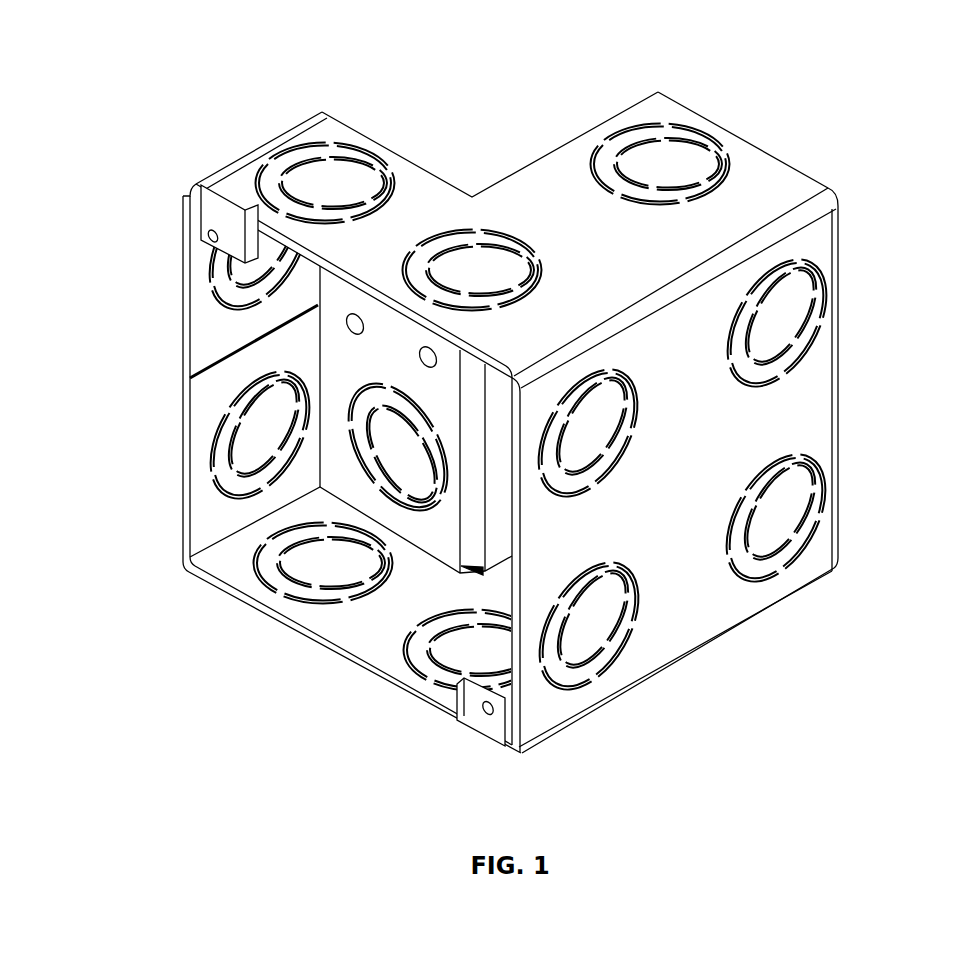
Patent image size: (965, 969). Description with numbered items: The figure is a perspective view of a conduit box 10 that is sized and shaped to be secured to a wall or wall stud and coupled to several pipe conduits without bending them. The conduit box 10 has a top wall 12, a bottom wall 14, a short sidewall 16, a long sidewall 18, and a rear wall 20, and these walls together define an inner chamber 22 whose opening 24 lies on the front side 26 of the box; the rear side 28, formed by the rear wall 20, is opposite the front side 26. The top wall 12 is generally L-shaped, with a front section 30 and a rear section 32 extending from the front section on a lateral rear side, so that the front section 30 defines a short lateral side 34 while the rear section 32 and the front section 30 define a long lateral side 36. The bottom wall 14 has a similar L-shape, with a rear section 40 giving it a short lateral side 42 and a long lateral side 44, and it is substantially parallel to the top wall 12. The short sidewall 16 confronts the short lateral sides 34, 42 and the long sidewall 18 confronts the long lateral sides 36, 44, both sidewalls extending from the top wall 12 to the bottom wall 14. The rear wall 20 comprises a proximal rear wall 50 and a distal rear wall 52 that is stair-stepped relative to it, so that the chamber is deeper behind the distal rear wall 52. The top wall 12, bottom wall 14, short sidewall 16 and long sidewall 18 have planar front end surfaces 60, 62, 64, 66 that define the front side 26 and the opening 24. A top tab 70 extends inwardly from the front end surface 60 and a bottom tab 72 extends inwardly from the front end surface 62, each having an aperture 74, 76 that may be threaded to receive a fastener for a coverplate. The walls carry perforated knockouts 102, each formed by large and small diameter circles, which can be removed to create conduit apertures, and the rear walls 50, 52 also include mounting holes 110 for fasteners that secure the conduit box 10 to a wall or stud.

The conduit box 10 is at (835, 123).
The top wall 12 is at (557, 193).
The bottom wall 14 is at (422, 712).
The short sidewall 16 is at (185, 353).
The long sidewall 18 is at (800, 432).
The rear wall 20 is at (783, 88).
The inner chamber 22 is at (382, 640).
The opening 24 is at (228, 592).
The front side 26 is at (200, 706).
The rear side 28 is at (912, 311).
The front section 30 is at (413, 193).
The rear section 32 is at (780, 188).
The short lateral side 34 is at (255, 146).
The long lateral side 36 is at (648, 292).
The rear section 40 is at (680, 655).
The short lateral side 42 is at (183, 560).
The long lateral side 44 is at (800, 686).
The proximal rear wall 50 is at (345, 482).
The distal rear wall 52 is at (842, 397).
The front end surface 60 is at (332, 293).
The front end surface 62 is at (292, 630).
The front end surface 64 is at (185, 456).
The front end surface 66 is at (517, 580).
The top tab 70 is at (171, 224).
The bottom tab 72 is at (473, 704).
The aperture 74 is at (148, 250).
The aperture 76 is at (498, 742).
The knockout 102 is at (433, 522).
The mounting hole 110 is at (422, 356).